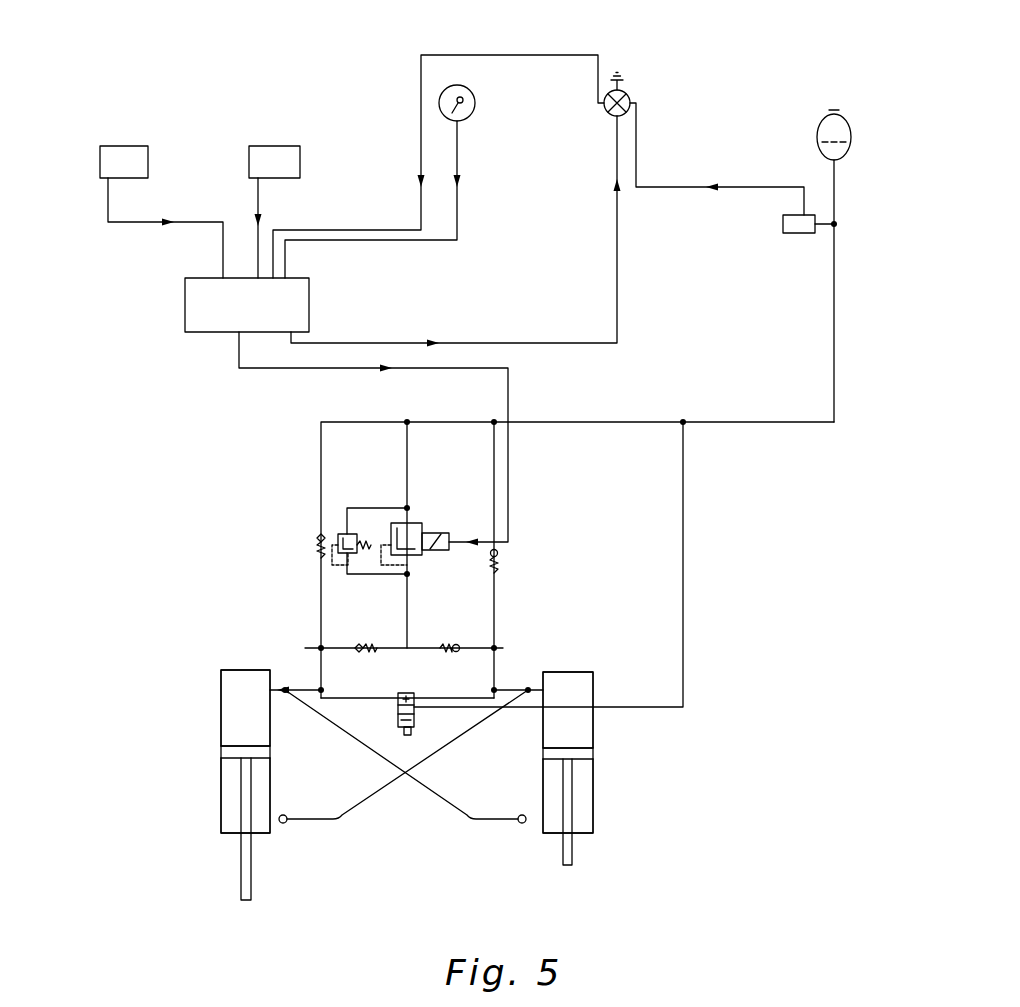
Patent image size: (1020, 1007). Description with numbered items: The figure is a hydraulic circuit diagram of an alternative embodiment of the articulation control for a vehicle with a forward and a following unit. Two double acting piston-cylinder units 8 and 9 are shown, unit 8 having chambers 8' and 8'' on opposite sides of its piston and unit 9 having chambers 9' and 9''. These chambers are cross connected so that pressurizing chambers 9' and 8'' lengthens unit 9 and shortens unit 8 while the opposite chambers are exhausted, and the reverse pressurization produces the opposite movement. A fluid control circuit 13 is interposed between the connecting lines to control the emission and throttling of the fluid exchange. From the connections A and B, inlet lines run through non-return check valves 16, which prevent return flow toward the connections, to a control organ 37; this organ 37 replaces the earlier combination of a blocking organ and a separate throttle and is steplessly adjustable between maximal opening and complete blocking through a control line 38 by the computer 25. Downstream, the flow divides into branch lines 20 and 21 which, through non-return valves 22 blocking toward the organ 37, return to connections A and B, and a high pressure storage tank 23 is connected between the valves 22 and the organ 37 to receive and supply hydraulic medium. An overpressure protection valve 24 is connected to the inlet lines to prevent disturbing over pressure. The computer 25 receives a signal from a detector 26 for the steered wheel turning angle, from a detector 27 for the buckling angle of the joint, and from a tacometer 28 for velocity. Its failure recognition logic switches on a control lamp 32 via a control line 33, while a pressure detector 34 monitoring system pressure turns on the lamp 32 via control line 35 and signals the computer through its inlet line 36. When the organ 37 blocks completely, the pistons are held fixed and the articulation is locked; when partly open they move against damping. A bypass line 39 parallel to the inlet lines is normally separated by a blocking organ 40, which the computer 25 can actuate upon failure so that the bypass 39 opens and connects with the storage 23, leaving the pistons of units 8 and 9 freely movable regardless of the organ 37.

The piston-cylinder unit 8 is at (223, 785).
The chamber 8' is at (245, 708).
The chamber 8'' is at (264, 795).
The piston-cylinder unit 9 is at (595, 768).
The chamber 9' is at (568, 710).
The chamber 9'' is at (586, 796).
The fluid control circuit 13 is at (380, 501).
The non-return check valve 16 is at (360, 643).
The branch line 20 is at (362, 424).
The branch line 21 is at (494, 444).
The non-return valve 22 is at (315, 541).
The high pressure source storage tank 23 is at (845, 114).
The overpressure protection valve 24 is at (338, 535).
The computer 25 is at (262, 318).
The detector 26 is at (147, 161).
The detector 27 is at (299, 161).
The tacometer 28 is at (475, 103).
The control lamp 32 is at (606, 112).
The control line 33 is at (352, 343).
The pressure detector 34 is at (785, 223).
The control line 35 is at (738, 186).
The inlet line 36 is at (421, 82).
The control organ 37 is at (409, 534).
The control line 38 is at (296, 369).
The bypass line 39 is at (355, 697).
The blocking organ 40 is at (398, 709).